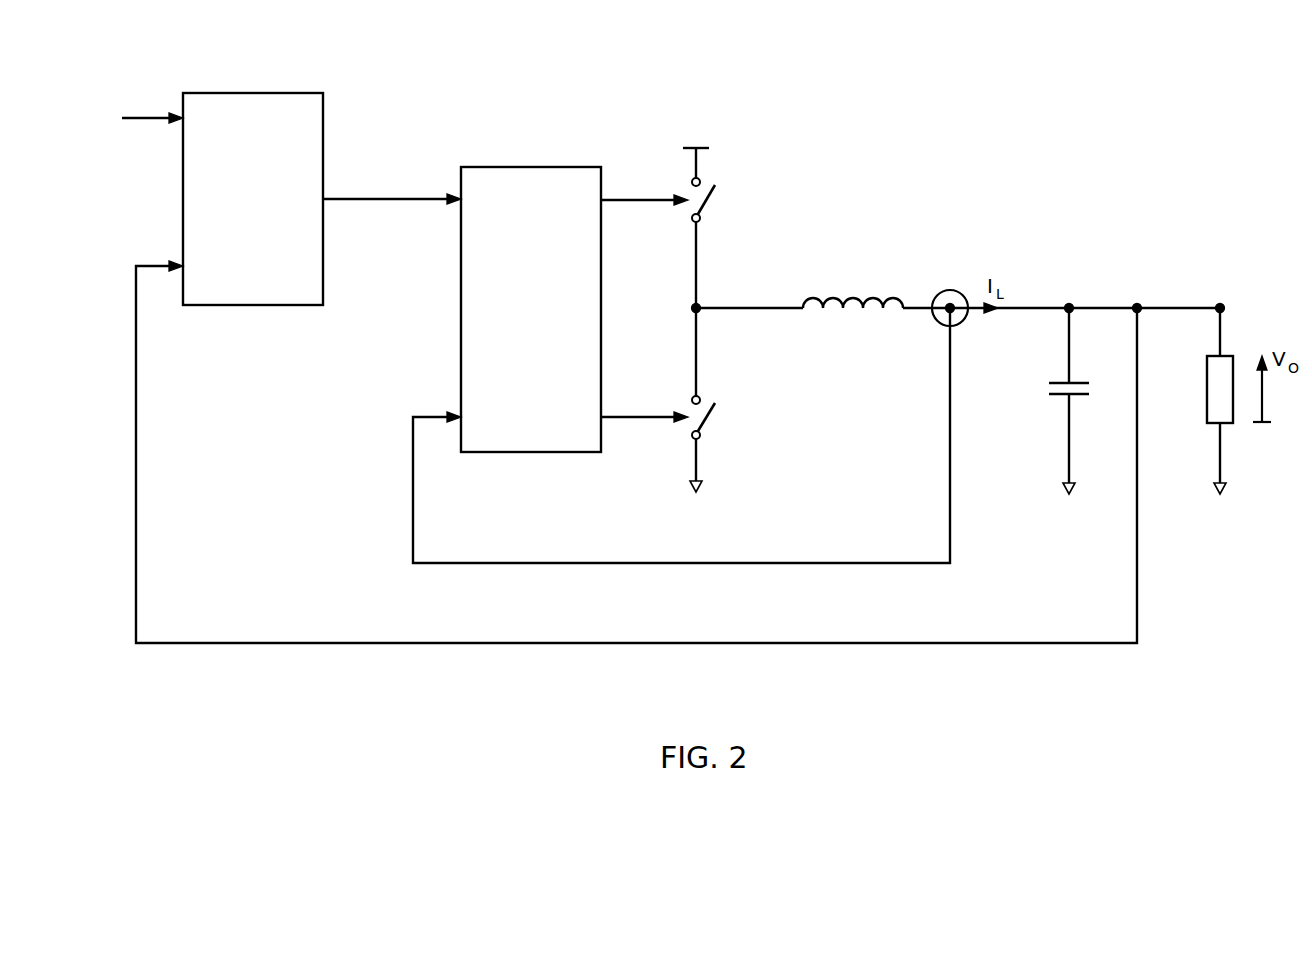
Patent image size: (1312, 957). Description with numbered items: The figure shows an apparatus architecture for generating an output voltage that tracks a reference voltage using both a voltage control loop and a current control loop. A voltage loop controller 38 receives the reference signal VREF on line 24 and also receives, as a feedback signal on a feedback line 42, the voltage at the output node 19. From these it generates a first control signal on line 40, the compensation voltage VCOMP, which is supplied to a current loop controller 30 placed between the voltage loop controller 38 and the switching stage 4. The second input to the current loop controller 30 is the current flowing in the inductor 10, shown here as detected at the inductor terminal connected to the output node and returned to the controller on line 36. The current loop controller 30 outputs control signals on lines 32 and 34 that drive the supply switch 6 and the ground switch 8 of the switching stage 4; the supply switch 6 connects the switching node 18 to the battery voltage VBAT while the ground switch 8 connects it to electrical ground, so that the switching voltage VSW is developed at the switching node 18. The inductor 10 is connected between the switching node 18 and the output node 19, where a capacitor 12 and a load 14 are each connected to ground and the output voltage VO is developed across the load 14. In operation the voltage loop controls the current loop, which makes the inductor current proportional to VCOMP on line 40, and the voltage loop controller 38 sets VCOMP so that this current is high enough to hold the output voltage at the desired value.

The switching stage 4 is at (722, 110).
The supply switch 6 is at (706, 206).
The ground switch 8 is at (706, 423).
The inductor 10 is at (846, 299).
The capacitor 12 is at (1058, 398).
The load 14 is at (1215, 425).
The switching node 18 is at (694, 306).
The output node 19 is at (1222, 305).
The reference voltage line 24 is at (150, 124).
The current loop controller 30 is at (540, 167).
The control signal line 32 is at (620, 200).
The control signal line 34 is at (620, 417).
The inductor current feedback path 36 is at (857, 563).
The voltage loop controller 38 is at (267, 93).
The first control signal line 40 is at (403, 203).
The feedback line 42 is at (680, 643).